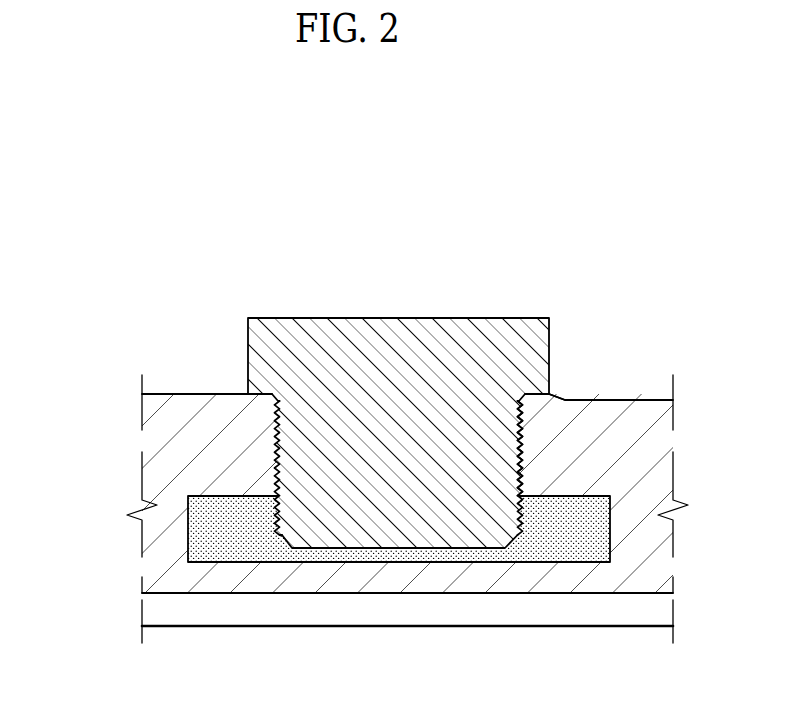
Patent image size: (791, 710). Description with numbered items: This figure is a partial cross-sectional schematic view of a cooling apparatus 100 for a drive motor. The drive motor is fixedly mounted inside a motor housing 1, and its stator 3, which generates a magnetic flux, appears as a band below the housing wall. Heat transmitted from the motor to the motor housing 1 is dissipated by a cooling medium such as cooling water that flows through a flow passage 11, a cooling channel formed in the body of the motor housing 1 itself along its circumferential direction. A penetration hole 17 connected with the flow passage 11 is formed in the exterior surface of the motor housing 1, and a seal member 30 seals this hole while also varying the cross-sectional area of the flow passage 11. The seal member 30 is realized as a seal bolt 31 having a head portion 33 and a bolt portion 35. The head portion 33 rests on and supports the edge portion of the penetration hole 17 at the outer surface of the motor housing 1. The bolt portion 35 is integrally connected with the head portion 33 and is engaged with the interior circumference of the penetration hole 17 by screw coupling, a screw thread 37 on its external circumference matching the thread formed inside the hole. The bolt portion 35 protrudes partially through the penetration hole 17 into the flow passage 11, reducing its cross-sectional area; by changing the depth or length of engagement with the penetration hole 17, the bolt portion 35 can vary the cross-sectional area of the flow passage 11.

The cooling apparatus 100 is at (222, 188).
The motor housing 1 is at (618, 400).
The stator 3 is at (380, 608).
The flow passage 11 is at (560, 547).
The penetration hole 17 is at (518, 417).
The seal member 30 is at (397, 389).
The seal bolt 31 is at (397, 435).
The head portion 33 is at (248, 340).
The bolt portion 35 is at (305, 428).
The screw thread 37 is at (271, 463).